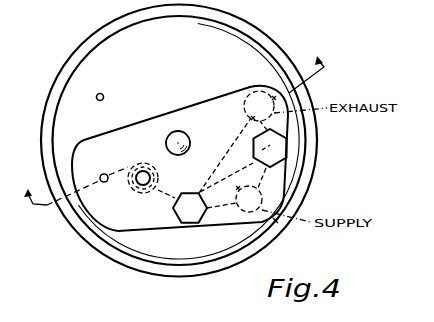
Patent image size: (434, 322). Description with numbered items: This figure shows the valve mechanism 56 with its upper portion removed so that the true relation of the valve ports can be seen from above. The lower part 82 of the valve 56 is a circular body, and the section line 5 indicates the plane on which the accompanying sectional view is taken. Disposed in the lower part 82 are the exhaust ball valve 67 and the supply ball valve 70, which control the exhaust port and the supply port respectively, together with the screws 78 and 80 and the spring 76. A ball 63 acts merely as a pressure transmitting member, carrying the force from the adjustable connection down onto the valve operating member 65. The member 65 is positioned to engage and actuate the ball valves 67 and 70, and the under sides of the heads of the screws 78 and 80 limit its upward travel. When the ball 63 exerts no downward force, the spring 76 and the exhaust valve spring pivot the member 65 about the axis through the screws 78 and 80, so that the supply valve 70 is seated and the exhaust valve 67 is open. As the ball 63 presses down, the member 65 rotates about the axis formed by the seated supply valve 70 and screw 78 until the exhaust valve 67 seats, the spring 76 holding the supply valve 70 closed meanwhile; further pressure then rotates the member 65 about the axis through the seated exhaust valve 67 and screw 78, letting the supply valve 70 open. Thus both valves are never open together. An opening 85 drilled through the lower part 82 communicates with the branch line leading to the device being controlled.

The section line 5- 5 is at (177, 136).
The valve mechanism 56 is at (154, 70).
The ball 63 is at (183, 135).
The valve operating member 65 is at (193, 166).
The exhaust ball valve 67 is at (252, 91).
The supply ball valve 70 is at (236, 190).
The spring 76 is at (146, 161).
The screw 78 is at (175, 212).
The screw 80 is at (256, 148).
The lower part of the valve 82 is at (316, 160).
The opening 85 is at (103, 98).